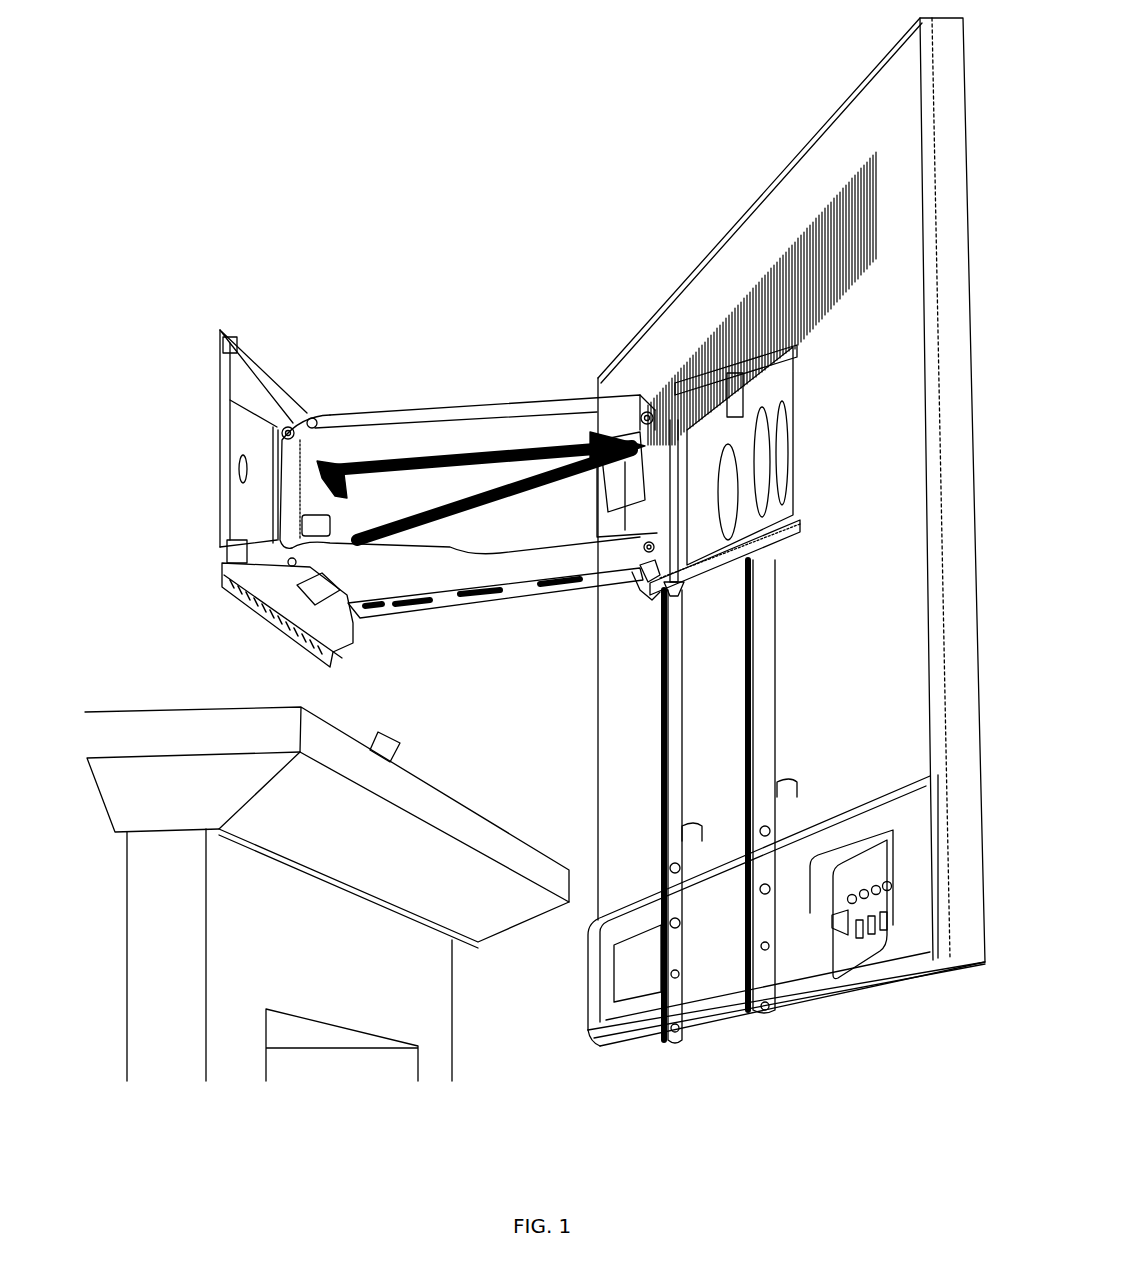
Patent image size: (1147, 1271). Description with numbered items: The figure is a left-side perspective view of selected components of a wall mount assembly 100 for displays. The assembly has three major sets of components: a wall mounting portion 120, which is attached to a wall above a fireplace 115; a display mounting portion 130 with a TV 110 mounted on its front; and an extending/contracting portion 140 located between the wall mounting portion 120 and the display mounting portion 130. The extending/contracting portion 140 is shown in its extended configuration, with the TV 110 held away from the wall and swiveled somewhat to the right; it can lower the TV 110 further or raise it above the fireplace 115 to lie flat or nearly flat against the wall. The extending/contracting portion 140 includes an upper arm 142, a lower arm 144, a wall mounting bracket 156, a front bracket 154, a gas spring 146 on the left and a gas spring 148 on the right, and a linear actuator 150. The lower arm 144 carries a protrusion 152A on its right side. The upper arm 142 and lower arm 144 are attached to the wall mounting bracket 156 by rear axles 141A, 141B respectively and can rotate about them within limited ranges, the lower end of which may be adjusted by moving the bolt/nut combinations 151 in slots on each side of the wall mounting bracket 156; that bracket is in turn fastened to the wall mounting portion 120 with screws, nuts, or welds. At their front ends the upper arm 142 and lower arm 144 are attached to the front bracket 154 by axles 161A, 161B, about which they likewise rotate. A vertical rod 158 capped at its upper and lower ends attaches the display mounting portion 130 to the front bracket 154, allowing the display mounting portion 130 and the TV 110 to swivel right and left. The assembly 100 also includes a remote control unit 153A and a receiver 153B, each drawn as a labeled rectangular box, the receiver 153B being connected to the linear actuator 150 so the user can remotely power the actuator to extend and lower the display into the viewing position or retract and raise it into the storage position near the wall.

The wall mount assembly 100 is at (272, 116).
The TV 110 is at (864, 82).
The fireplace 115 is at (150, 705).
The wall mounting portion 120 is at (227, 410).
The display mounting portion 130 is at (745, 694).
The extending/contracting portion 140 is at (615, 310).
The rear axle 141A is at (280, 425).
The rear axle 141B is at (282, 560).
The upper arm 142 is at (463, 405).
The lower arm 144 is at (445, 612).
The gas spring 146 is at (372, 468).
The gas spring 148 is at (430, 479).
The linear actuator 150 is at (562, 467).
The bolt/nut combination 151 is at (300, 590).
The protrusion 152A is at (650, 586).
The remote control unit 153A is at (388, 726).
The receiver 153B is at (298, 522).
The front bracket 154 is at (637, 500).
The wall mounting bracket 156 is at (307, 498).
The rod 158 is at (692, 572).
The axle 161A is at (668, 420).
The axle 161B is at (657, 545).